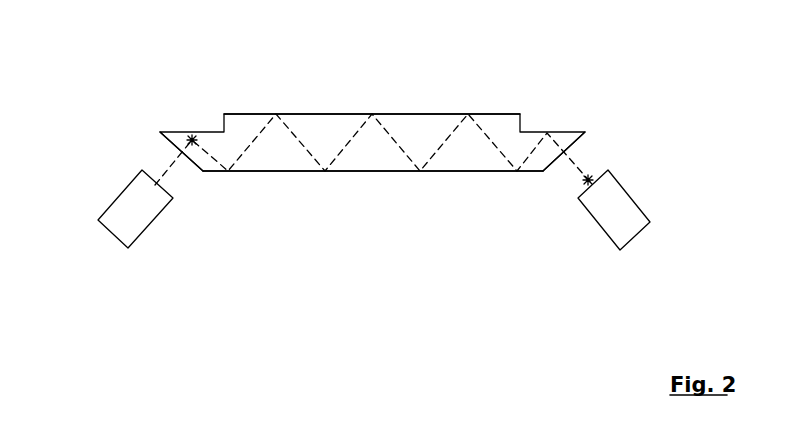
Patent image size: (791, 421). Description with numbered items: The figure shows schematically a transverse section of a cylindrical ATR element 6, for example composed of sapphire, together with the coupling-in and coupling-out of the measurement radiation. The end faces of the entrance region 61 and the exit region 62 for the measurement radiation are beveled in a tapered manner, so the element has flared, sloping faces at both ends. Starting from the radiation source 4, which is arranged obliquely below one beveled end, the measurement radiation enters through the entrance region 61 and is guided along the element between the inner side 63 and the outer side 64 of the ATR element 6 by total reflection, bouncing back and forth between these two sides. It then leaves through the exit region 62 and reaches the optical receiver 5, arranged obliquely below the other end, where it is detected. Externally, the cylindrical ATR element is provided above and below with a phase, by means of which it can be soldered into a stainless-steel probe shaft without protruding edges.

The radiation source 4 is at (132, 202).
The optical receiver 5 is at (607, 203).
The cylindrical ATR element 6 is at (338, 135).
The entrance region 61 is at (188, 157).
The exit region 62 is at (553, 162).
The inner side 63 is at (440, 172).
The outer side 64 is at (440, 114).